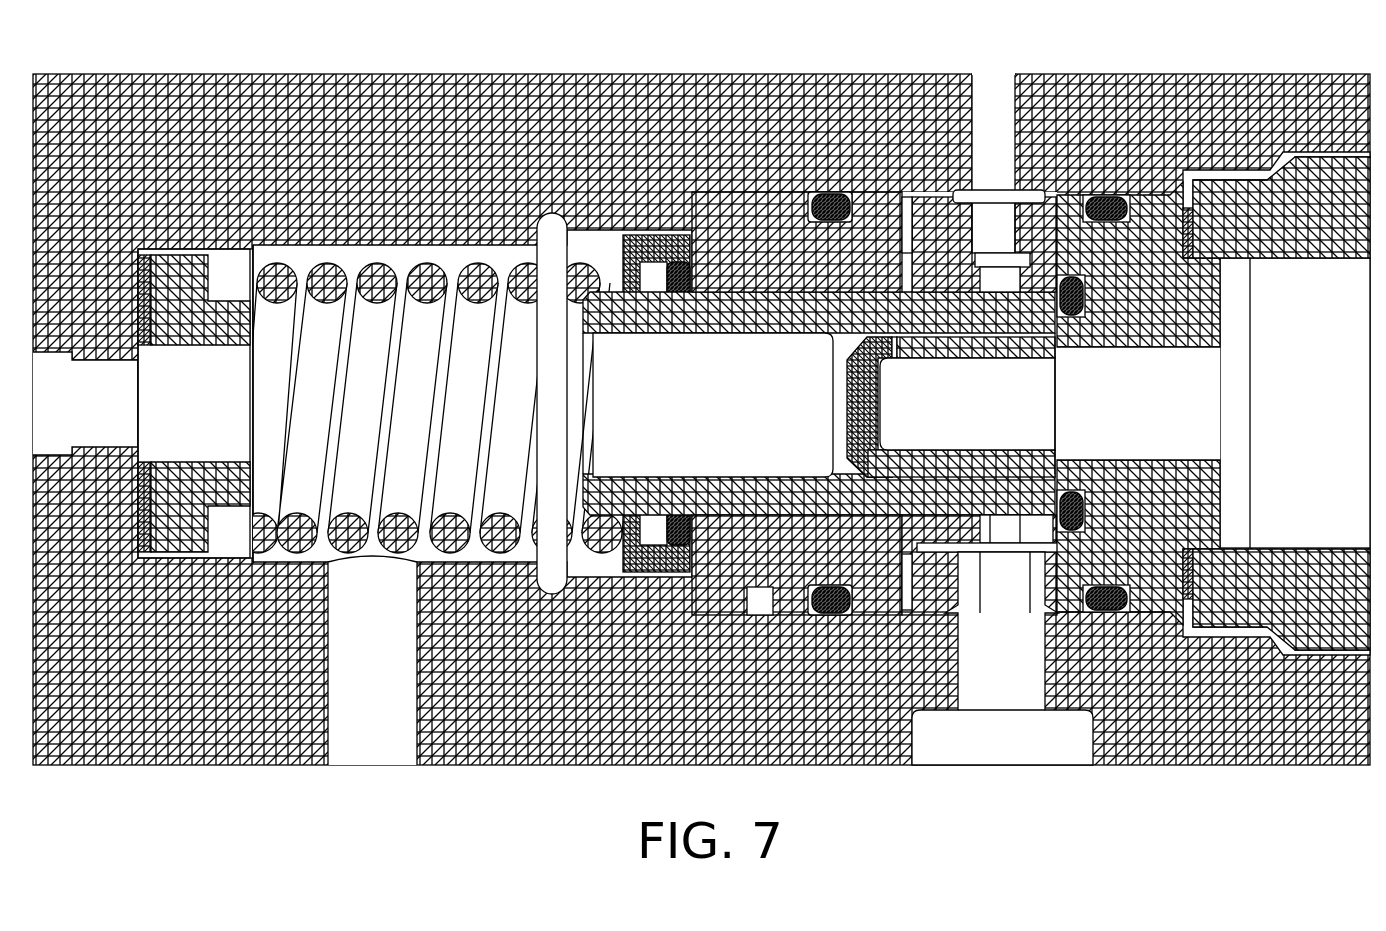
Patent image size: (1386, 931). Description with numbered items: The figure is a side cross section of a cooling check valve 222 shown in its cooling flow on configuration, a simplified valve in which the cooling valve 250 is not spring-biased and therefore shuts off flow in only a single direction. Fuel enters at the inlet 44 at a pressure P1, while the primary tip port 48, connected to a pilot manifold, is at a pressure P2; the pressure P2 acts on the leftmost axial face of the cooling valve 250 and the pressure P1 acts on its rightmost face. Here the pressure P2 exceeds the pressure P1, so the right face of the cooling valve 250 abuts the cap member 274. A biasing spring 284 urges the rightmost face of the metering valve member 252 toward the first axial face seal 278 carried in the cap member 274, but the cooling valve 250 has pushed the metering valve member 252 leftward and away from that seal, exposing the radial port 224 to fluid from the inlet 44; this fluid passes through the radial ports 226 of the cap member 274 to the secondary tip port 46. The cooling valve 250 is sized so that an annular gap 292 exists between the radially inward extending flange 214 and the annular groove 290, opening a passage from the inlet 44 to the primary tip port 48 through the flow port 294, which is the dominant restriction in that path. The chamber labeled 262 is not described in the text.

The cooling check valve 222 is at (260, 777).
The biasing spring 284 is at (455, 247).
The piston chamber 262 is at (603, 370).
The metering valve member 252 is at (745, 292).
The cooling valve 250 is at (920, 336).
The radial ports 226 is at (985, 230).
The secondary tip port 46 is at (1003, 86).
The radial port 224 is at (1004, 260).
The radially inward extending flange 214 is at (837, 352).
The annular groove 290 is at (847, 362).
The annular gap 292 is at (845, 454).
The flow port 294 is at (897, 364).
The cap member 274 is at (1212, 310).
The first axial face seal 278 is at (1074, 332).
The inlet 44 is at (1190, 437).
The primary tip port 48 is at (391, 752).
The pressure P1 is at (1200, 402).
The pressure P2 is at (887, 322).